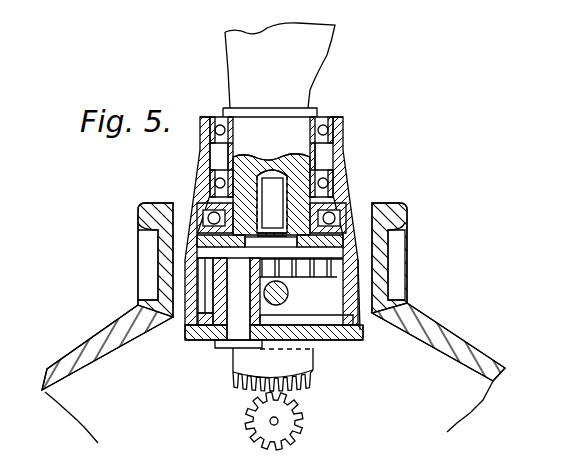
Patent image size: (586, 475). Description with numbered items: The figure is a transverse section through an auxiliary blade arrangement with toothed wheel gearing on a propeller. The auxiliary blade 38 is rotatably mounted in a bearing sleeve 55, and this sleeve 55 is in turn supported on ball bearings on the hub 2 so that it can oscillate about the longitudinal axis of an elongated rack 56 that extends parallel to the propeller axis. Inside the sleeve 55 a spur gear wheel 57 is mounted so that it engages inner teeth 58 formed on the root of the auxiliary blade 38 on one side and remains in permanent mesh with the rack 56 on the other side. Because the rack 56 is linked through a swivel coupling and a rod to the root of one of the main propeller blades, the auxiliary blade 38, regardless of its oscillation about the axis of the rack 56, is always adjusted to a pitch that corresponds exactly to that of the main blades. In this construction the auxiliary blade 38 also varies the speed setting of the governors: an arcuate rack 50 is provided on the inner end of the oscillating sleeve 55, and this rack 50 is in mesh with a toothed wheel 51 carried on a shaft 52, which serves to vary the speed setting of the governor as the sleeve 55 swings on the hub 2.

The hub 2 is at (452, 329).
The auxiliary blade 38 is at (308, 56).
The arcuate rack 50 is at (307, 393).
The toothed wheel 51 is at (290, 431).
The shaft 52 is at (270, 423).
The bearing sleeve 55 is at (338, 212).
The rack 56 is at (288, 297).
The spur gear wheel 57 is at (205, 300).
The inner teeth 58 is at (313, 272).